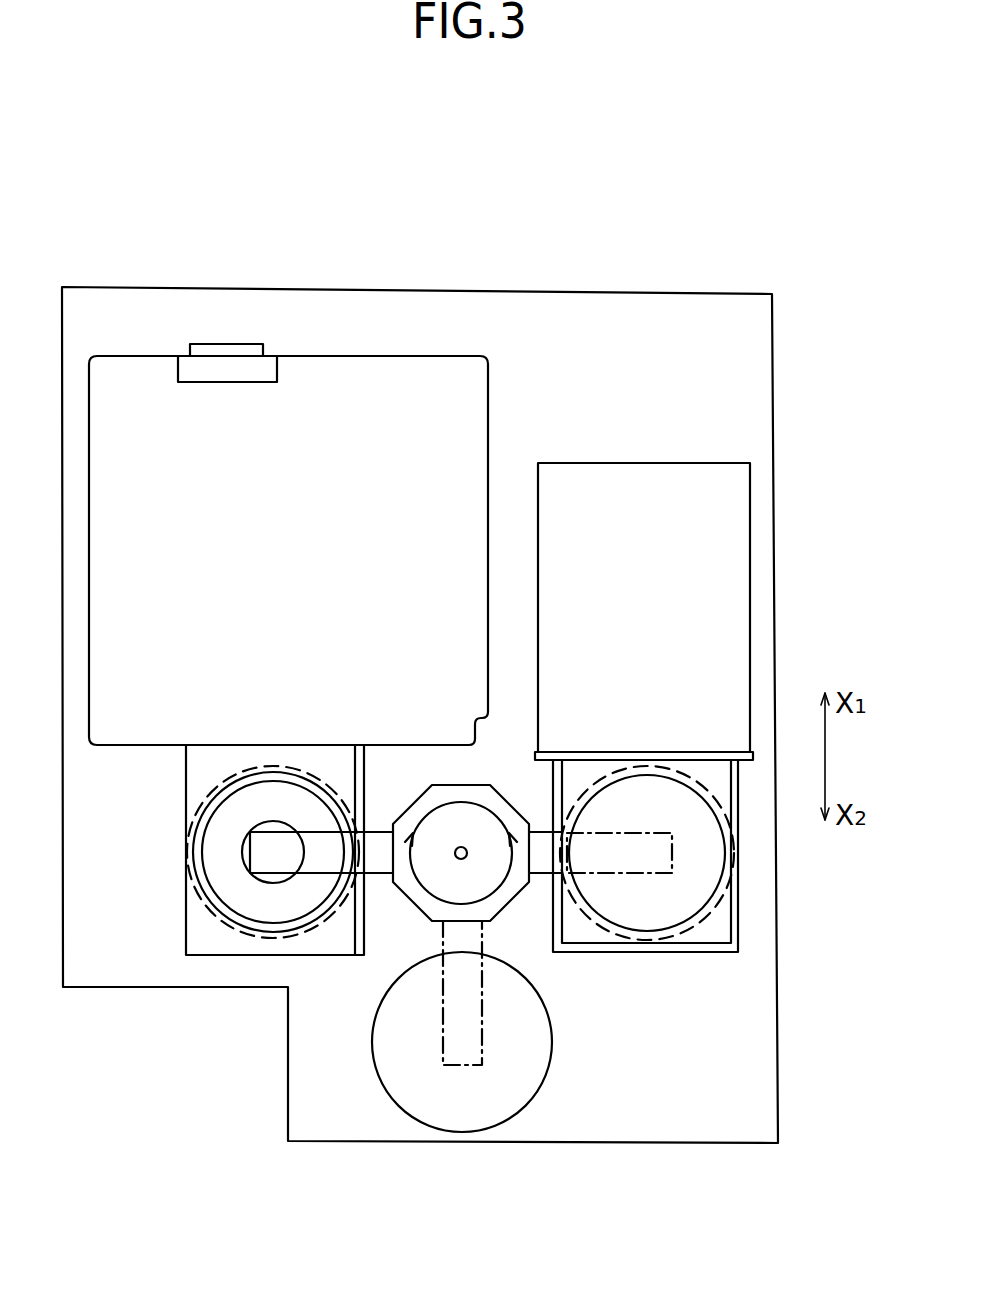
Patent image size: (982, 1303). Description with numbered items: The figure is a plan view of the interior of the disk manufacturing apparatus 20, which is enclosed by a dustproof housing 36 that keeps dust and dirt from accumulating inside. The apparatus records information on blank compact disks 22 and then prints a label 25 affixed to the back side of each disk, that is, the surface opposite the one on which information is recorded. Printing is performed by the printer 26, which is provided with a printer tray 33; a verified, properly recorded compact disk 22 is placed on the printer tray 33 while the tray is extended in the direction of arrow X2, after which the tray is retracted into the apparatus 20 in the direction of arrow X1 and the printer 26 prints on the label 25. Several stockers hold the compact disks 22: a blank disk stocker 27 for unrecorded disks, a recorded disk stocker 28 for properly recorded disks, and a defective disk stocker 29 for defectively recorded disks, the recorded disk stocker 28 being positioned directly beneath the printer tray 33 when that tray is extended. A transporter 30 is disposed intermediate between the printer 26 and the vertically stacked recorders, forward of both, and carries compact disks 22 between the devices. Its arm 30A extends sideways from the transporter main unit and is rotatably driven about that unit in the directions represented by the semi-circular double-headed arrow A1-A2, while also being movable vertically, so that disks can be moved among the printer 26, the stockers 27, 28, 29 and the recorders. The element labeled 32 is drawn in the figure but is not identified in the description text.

The disk manufacturing apparatus 20 is at (508, 146).
The compact disk 22 is at (233, 776).
The label 25 is at (270, 798).
The printer 26 is at (353, 373).
The blank disk stocker 27 is at (518, 1117).
The recorded disk stocker 28 is at (322, 938).
The defective disk stocker 29 is at (688, 932).
The transporter 30 is at (508, 910).
The arm 30A is at (276, 853).
The cleaning unit 32 is at (715, 538).
The printer tray 33 is at (205, 938).
The dustproof housing 36 is at (648, 290).